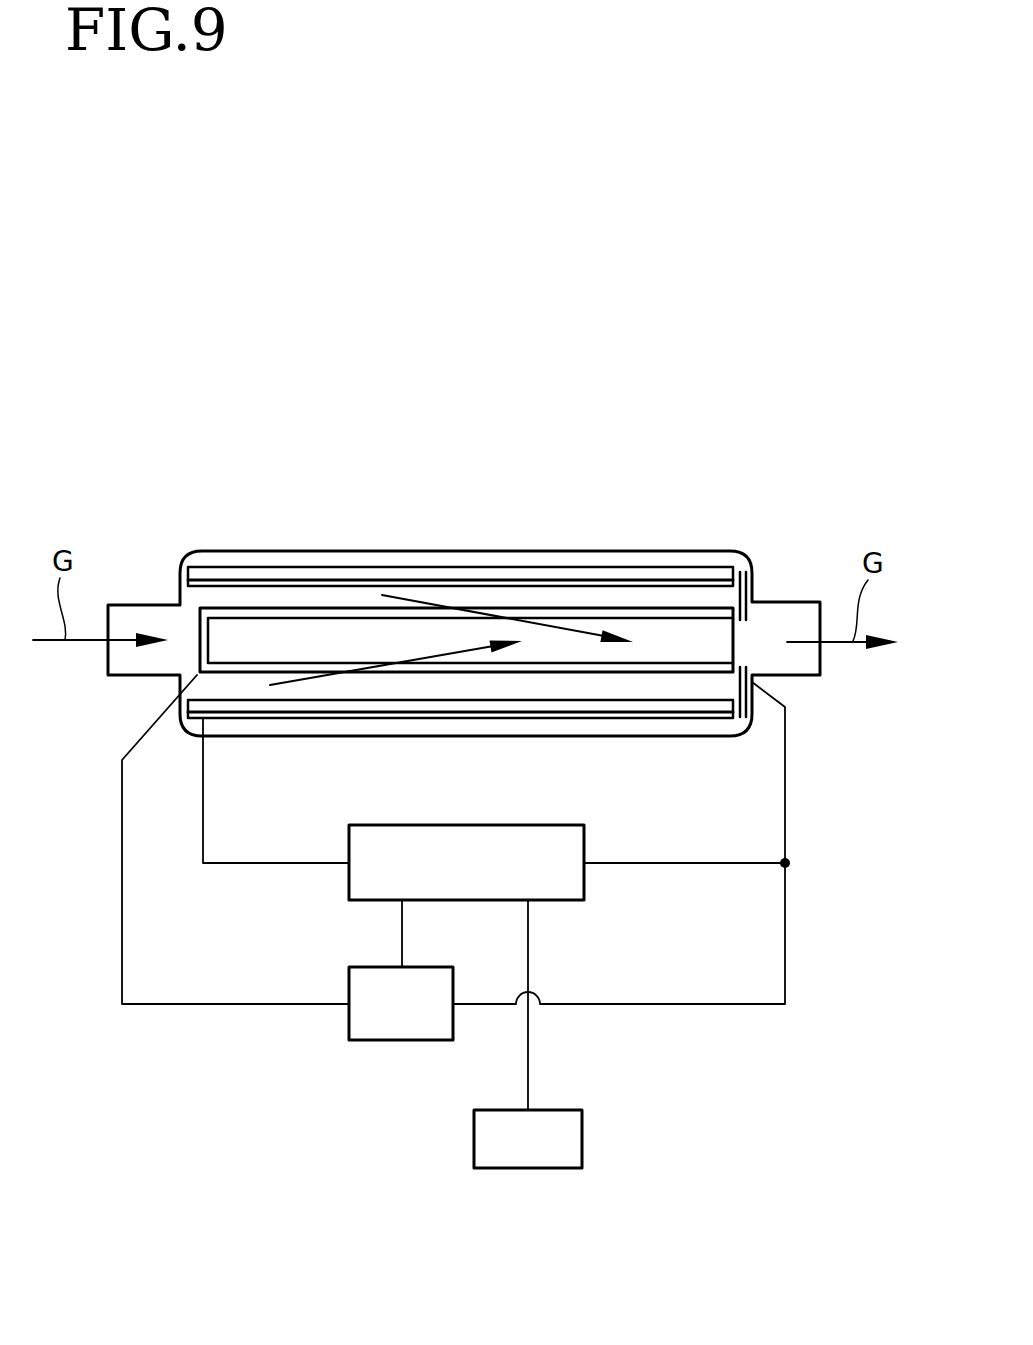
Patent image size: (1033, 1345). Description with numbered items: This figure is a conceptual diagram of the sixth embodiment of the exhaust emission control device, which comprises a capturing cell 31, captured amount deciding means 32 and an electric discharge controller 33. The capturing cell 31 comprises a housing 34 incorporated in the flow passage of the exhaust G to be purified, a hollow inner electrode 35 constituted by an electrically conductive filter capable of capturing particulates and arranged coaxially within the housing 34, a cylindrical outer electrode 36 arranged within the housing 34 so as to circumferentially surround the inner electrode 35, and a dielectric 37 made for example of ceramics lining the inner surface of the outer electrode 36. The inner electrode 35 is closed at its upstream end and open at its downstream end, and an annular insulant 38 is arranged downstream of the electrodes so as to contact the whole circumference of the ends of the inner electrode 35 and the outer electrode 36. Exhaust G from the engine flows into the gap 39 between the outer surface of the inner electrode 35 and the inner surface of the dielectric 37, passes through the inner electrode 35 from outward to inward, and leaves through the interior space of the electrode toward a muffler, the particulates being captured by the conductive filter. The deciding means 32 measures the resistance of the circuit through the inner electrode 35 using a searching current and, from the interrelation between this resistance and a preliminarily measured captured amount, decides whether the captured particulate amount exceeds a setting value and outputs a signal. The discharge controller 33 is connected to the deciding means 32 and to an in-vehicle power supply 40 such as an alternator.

The capturing cell 31 is at (409, 545).
The captured amount deciding means 32 is at (370, 1042).
The electric discharge controller 33 is at (349, 900).
The housing 34 is at (580, 551).
The hollow inner electrode 35 is at (665, 675).
The cylindrical outer electrode 36 is at (283, 710).
The dielectric 37 is at (345, 703).
The annular insulant 38 is at (757, 702).
The gap 39 is at (475, 687).
The in-vehicle power supply 40 is at (553, 1170).